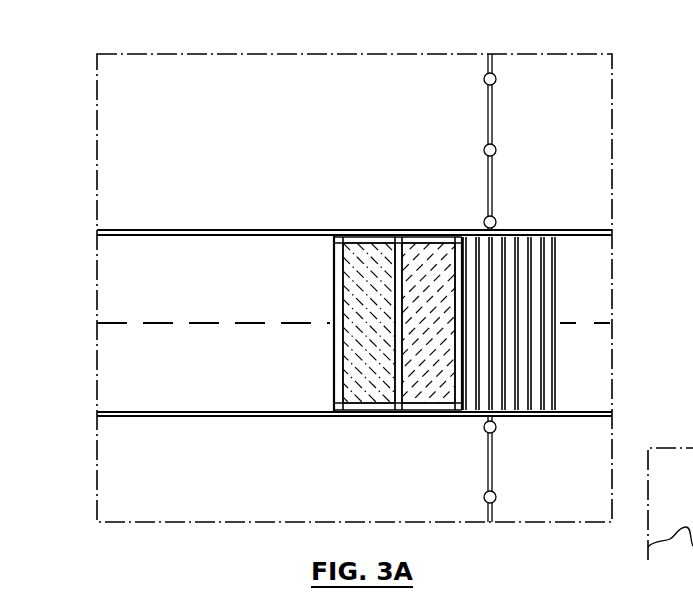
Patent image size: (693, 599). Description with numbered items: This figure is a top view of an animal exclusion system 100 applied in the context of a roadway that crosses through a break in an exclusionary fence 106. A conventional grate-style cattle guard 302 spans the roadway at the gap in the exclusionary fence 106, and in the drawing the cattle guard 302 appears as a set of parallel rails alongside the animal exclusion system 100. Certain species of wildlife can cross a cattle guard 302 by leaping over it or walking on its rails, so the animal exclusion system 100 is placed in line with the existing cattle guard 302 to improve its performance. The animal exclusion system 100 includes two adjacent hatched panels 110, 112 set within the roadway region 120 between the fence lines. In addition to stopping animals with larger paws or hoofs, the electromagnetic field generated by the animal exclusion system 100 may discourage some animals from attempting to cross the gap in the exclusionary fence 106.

The animal exclusion system 100 is at (398, 428).
The exclusionary fence 106 is at (492, 119).
The first electrode 110 is at (366, 228).
The second electrode 112 is at (431, 228).
The duct / flow channel 120 is at (217, 375).
The cattle guard 302 is at (564, 277).